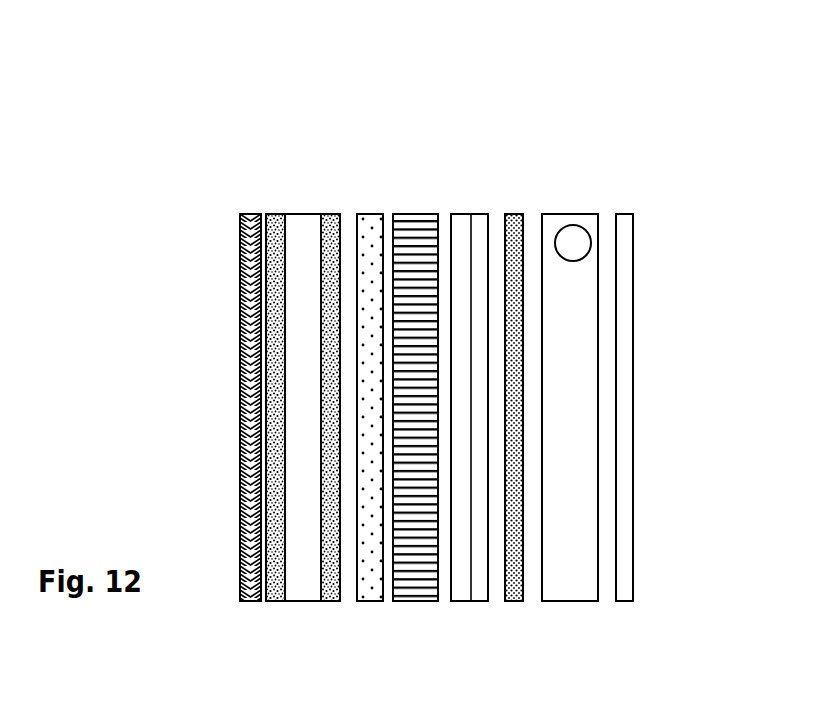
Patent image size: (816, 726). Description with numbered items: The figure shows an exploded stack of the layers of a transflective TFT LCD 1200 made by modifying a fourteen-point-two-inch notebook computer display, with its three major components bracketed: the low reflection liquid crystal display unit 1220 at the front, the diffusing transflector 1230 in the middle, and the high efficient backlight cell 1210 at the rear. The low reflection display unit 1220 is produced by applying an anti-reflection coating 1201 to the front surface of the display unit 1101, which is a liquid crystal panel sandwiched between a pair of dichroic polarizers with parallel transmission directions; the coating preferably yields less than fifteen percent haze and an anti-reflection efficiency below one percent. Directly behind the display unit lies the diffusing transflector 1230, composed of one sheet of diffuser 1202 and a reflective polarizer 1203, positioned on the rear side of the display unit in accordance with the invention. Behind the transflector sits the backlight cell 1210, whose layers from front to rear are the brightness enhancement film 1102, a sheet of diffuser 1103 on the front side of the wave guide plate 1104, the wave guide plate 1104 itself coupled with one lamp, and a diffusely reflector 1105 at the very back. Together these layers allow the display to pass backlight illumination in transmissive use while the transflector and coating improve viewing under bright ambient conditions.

The transflective TFT LCD 1200 is at (630, 621).
The low reflection liquid crystal display unit 1220 is at (120, 85).
The diffusing transflector 1230 is at (415, 85).
The high efficient backlight cell 1210 is at (471, 83).
The anti-reflection coating 1201 is at (242, 217).
The display unit 1101 is at (295, 217).
The diffuser 1202 is at (367, 217).
The reflective polarizer 1203 is at (413, 215).
The brightness enhancement film 1102 is at (472, 220).
The diffuser 1103 is at (523, 217).
The wave guide plate 1104 is at (578, 212).
The diffusely reflector 1105 is at (635, 217).